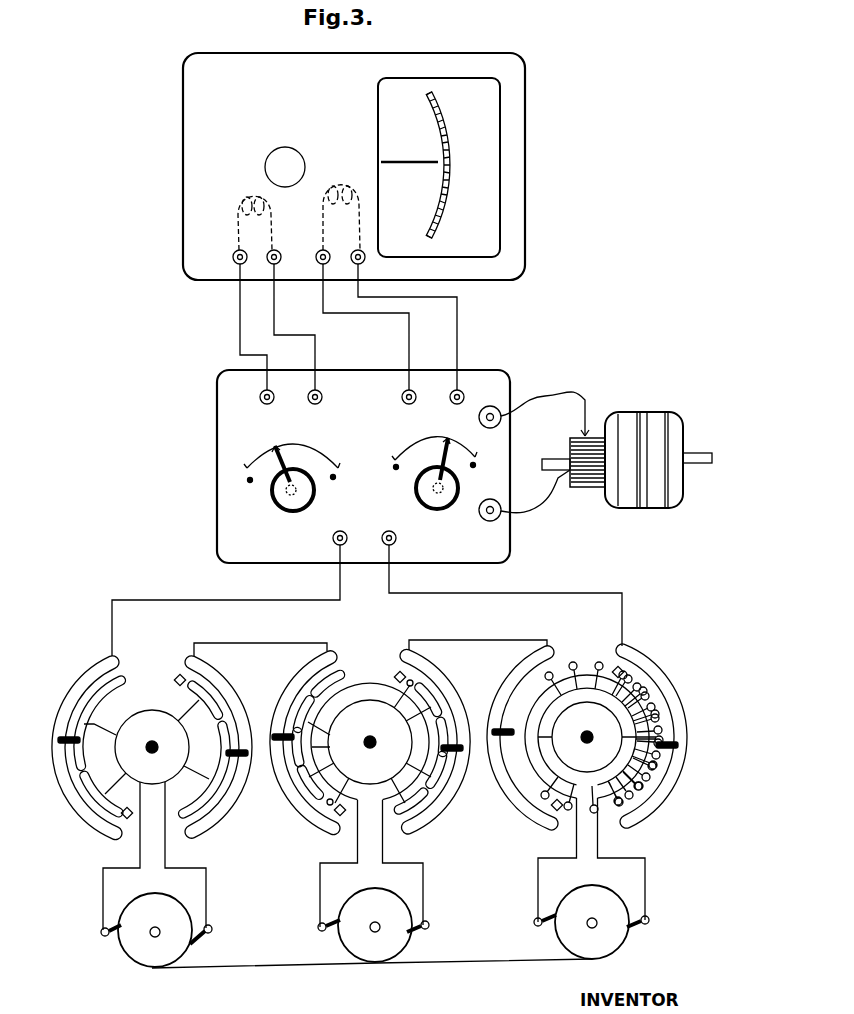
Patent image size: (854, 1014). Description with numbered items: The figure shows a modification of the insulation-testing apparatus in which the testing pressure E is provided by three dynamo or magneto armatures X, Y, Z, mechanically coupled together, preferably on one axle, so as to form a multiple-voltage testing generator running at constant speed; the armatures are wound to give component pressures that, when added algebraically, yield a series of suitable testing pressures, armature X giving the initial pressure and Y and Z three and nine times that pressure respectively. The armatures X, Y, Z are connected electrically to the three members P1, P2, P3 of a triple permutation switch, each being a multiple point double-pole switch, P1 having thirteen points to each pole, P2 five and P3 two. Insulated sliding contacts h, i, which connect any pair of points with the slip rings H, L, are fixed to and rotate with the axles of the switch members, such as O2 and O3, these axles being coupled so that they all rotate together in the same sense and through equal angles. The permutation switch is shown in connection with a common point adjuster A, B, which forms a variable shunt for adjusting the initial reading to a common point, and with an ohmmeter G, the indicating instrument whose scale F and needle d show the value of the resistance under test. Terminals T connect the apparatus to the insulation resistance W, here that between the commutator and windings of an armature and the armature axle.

The indicating instrument G is at (373, 166).
The galvanometer scale F is at (439, 167).
The galvanometer needle d is at (409, 151).
The terminals T is at (490, 469).
The insulation resistance W is at (606, 451).
The common point adjuster part A is at (292, 491).
The common point adjuster part B is at (434, 485).
The slip ring L is at (101, 668).
The slip ring H is at (229, 690).
The insulated sliding contact i is at (66, 738).
The insulated sliding contact h is at (238, 757).
The permutation switch member P3 is at (152, 797).
The permutation switch member P2 is at (370, 794).
The permutation switch member P1 is at (613, 776).
The axle O3 is at (152, 747).
The axle O2 is at (370, 742).
The dynamo armature Z is at (159, 930).
The dynamo armature Y is at (376, 925).
The dynamo armature X is at (594, 922).
The testing pressure source E is at (372, 972).